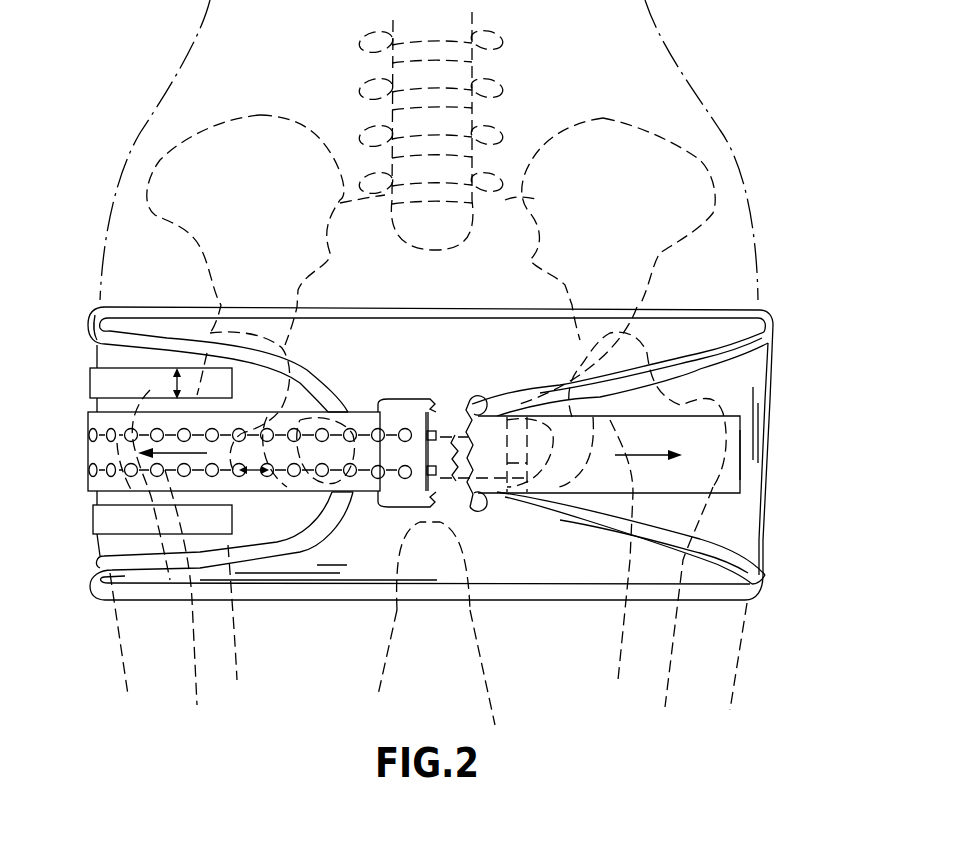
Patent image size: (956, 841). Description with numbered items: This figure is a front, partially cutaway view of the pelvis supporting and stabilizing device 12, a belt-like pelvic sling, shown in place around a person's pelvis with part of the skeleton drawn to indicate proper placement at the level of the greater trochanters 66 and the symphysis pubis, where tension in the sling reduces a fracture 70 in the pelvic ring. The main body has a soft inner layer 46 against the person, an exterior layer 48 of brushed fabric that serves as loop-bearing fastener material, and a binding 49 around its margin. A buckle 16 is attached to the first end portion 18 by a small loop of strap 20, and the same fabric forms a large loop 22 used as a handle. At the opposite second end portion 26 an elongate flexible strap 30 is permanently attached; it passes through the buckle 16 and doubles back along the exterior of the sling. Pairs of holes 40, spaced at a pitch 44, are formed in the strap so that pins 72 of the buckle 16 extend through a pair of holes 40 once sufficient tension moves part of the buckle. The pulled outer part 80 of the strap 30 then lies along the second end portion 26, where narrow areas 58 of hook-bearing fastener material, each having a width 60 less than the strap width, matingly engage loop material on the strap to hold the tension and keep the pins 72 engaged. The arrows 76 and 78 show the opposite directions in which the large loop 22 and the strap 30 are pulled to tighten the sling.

The pelvis supporting and stabilizing device 12 is at (774, 306).
The buckle 16 is at (407, 400).
The first end portion 18 is at (551, 497).
The strap 20 is at (490, 500).
The large loop 22 is at (683, 502).
The second end portion 26 is at (323, 537).
The elongate flexible strap 30 is at (366, 413).
The holes 40 is at (364, 492).
The pitch 44 is at (252, 478).
The inner layer 46 is at (178, 309).
The exterior layer 48 is at (303, 393).
The binding 49 is at (767, 578).
The area of hook-bearing fastener material 58 is at (90, 385).
The width 60 is at (178, 370).
The greater trochanters 66 is at (90, 456).
The fracture 70 is at (468, 447).
The pins 72 is at (434, 433).
The arrow 76 is at (660, 450).
The arrow 78 is at (168, 458).
The outer part of the intermediate portion 80 is at (275, 480).